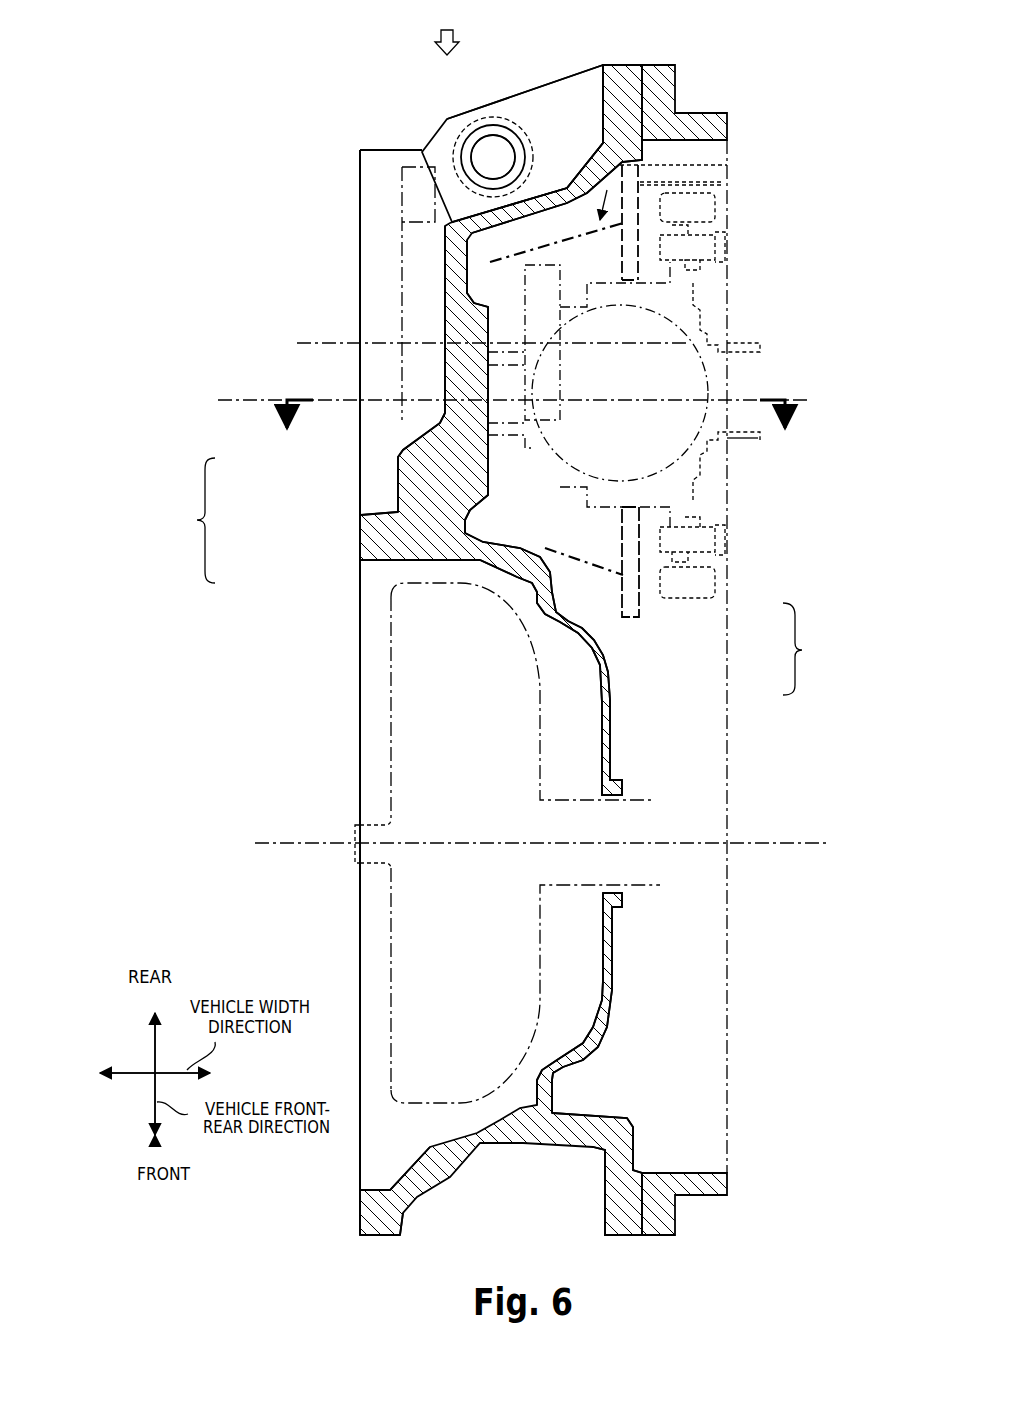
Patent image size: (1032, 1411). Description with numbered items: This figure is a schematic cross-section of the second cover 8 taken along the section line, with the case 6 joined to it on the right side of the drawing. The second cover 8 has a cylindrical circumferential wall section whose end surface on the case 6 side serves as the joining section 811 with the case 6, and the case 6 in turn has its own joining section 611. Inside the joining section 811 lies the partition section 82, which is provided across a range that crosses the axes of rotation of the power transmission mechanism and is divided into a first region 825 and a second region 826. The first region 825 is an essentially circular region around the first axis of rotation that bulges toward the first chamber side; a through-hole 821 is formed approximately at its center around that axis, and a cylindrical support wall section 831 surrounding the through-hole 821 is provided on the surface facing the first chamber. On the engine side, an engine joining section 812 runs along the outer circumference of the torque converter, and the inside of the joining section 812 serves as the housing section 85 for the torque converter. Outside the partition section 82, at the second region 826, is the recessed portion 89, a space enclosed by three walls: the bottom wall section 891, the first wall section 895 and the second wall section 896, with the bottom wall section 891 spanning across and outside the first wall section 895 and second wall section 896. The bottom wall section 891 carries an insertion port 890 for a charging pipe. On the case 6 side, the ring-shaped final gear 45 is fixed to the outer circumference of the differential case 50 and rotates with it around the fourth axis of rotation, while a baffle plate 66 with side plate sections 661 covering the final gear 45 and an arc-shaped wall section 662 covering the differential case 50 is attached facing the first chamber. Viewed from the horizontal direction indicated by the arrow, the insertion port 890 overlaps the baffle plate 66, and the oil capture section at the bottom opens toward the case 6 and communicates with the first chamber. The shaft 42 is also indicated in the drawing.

The case 6 is at (728, 114).
The second cover 8 is at (357, 201).
The shaft 42 is at (562, 374).
The final gear 45 is at (717, 210).
The differential case 50 is at (696, 306).
The baffle plate 66 is at (810, 649).
The side plate section 661 is at (640, 607).
The arc-shaped wall section 662 is at (490, 260).
The partition section 82 is at (183, 520).
The housing section 85 is at (583, 937).
The recessed portion 89 is at (419, 127).
The joining section 811 is at (623, 1217).
The joining section 812 is at (363, 542).
The through-hole 821 is at (622, 797).
The first region 825 is at (543, 597).
The second region 826 is at (447, 462).
The support wall section 831 is at (626, 900).
The insertion port 890 is at (492, 135).
The bottom wall section 891 is at (517, 118).
The first wall section 895 is at (560, 197).
The second wall section 896 is at (593, 167).
The joining section 611 is at (660, 1213).